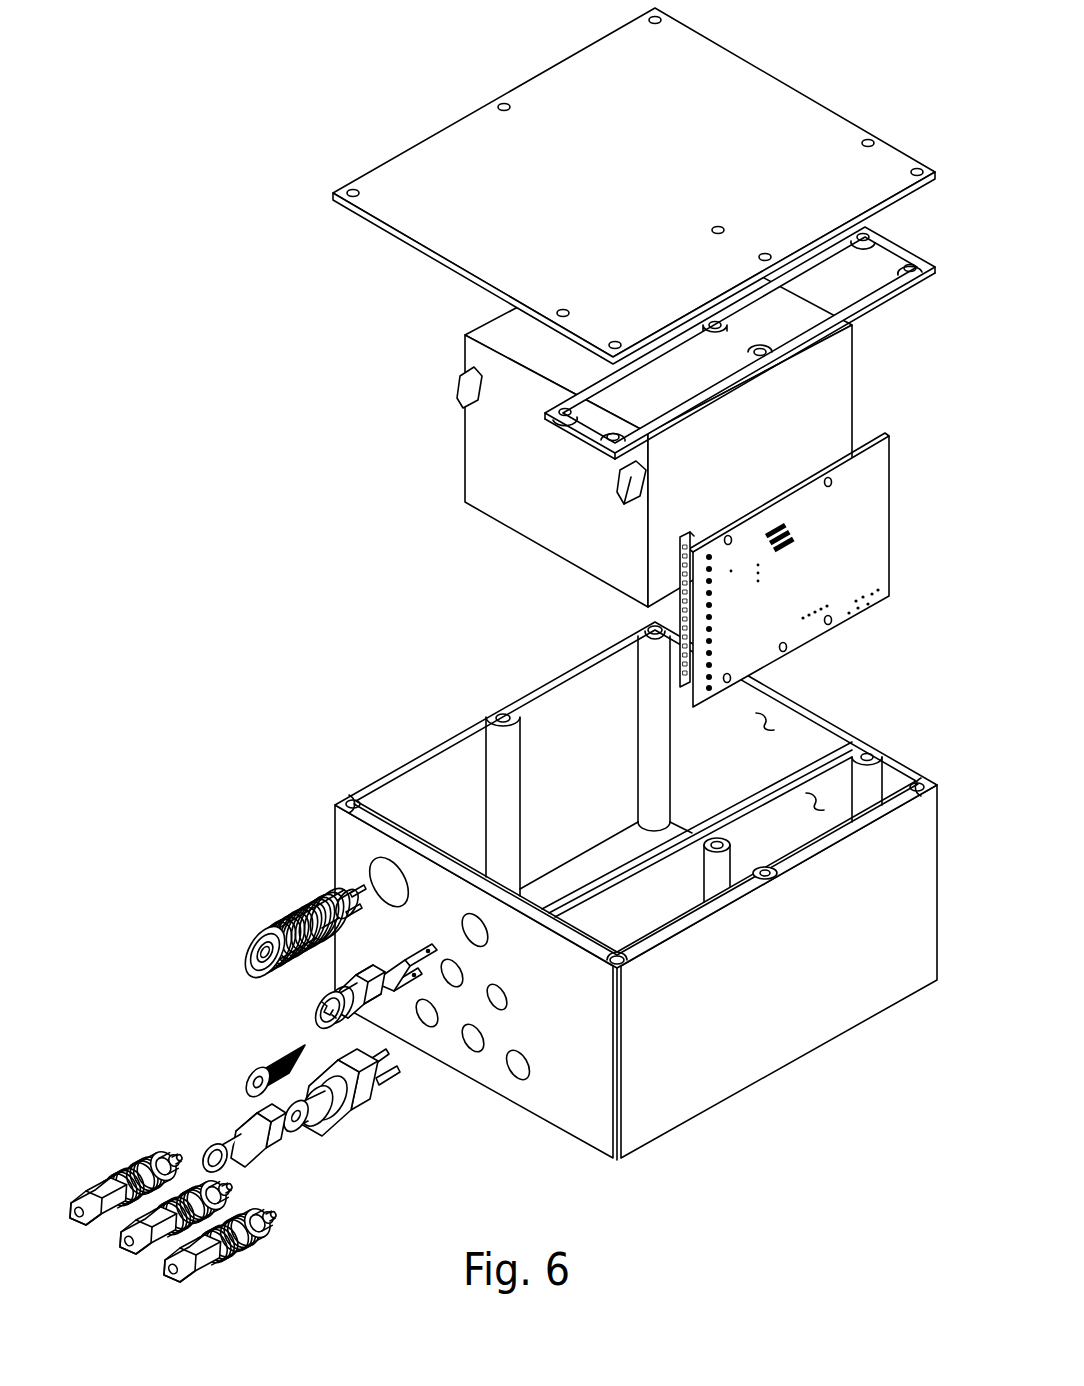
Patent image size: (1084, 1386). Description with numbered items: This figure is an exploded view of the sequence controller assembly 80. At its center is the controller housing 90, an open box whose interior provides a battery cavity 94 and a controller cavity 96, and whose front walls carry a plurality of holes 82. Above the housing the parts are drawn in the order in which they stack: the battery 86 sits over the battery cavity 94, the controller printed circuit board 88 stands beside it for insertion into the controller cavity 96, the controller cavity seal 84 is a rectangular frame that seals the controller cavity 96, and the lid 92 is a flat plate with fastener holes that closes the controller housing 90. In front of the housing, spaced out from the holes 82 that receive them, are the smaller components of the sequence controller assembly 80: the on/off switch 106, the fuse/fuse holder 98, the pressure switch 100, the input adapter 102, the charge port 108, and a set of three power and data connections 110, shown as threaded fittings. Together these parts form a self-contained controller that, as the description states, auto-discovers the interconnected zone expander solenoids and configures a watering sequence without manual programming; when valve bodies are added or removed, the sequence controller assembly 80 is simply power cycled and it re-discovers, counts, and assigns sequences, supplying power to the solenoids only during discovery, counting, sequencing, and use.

The sequence controller assembly 80 is at (221, 135).
The holes 82 is at (364, 869).
The controller cavity seal 84 is at (883, 305).
The battery 86 is at (495, 450).
The controller printed circuit board 88 is at (853, 528).
The controller housing 90 is at (415, 790).
The lid 92 is at (413, 174).
The battery cavity 94 is at (772, 718).
The controller cavity 96 is at (813, 808).
The fuse/fuse holder 98 is at (393, 984).
The pressure switch 100 is at (353, 1121).
The input adapter 102 is at (260, 1143).
The on/off switch 106 is at (258, 925).
The charge port 108 is at (253, 1067).
The power and data connections 110 is at (173, 1254).